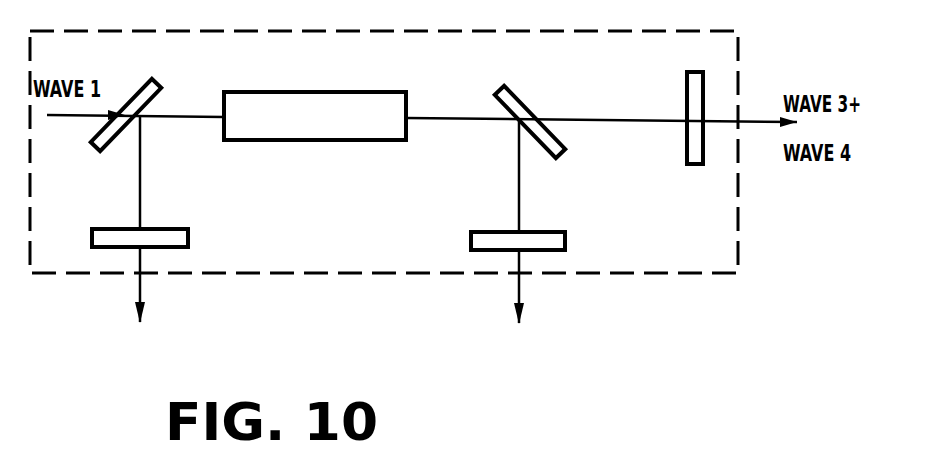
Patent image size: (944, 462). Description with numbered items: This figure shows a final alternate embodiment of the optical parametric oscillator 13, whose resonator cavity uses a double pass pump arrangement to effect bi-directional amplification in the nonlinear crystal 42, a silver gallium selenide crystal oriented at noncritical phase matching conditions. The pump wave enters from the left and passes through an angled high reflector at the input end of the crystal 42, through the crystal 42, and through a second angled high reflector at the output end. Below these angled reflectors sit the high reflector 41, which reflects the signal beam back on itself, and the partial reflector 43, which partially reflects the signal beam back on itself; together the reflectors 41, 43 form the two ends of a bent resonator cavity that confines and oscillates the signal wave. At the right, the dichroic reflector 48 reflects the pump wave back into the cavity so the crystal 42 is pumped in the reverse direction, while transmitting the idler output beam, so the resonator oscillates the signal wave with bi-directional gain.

The optical parametric oscillator 13 is at (327, 275).
The high reflector 41 is at (160, 249).
The nonlinear crystal 42 is at (318, 90).
The partial reflector 43 is at (545, 253).
The dichroic reflector 48 is at (693, 166).